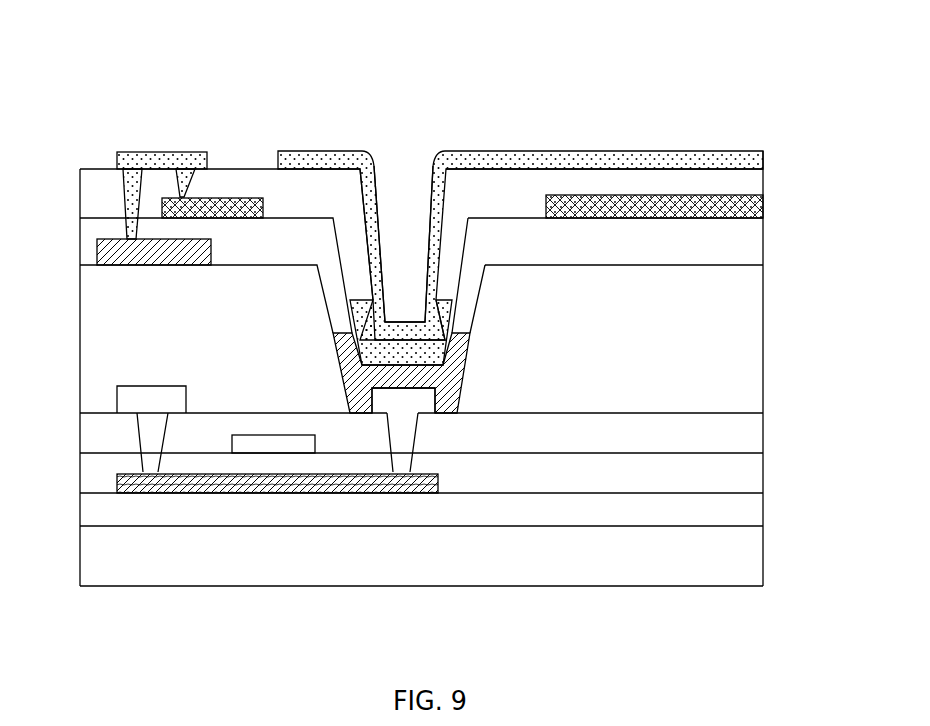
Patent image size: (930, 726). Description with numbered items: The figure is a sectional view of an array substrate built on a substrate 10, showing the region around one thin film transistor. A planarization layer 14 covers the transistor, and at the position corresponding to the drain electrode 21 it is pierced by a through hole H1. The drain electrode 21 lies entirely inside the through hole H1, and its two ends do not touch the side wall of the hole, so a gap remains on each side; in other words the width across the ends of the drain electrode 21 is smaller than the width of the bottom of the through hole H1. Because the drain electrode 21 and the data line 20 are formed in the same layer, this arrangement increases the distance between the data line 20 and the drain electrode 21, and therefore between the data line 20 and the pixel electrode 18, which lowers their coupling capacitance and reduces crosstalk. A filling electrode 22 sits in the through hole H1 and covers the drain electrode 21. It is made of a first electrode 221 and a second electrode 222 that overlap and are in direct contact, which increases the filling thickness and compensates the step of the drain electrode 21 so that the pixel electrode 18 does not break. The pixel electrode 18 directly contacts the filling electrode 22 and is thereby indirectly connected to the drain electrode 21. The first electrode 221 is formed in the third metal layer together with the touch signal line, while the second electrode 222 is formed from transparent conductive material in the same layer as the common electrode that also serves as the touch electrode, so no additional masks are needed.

The substrate 10 is at (706, 628).
The planarization layer 14 is at (690, 306).
The pixel electrode 18 is at (522, 162).
The data line 20 is at (142, 398).
The drain electrode 21 is at (458, 392).
The filling electrode 22 is at (197, 72).
The first electrode 221 is at (342, 357).
The second electrode 222 is at (357, 327).
The through hole H1 is at (412, 300).